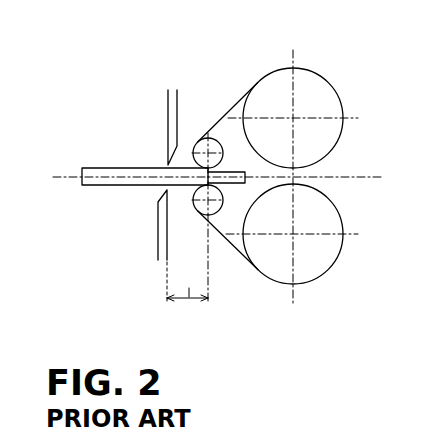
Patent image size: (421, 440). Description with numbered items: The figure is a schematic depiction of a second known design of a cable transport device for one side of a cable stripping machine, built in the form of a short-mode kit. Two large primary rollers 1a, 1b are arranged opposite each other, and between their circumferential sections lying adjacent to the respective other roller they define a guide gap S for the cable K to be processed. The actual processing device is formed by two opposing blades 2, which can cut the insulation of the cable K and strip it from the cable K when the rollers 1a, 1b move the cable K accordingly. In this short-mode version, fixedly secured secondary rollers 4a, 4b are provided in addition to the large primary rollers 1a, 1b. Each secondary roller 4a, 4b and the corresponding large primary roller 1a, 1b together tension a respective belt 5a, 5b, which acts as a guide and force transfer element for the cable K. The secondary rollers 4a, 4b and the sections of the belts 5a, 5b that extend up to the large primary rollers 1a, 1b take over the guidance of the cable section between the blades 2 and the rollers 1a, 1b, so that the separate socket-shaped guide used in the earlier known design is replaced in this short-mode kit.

The cable K is at (100, 168).
The blades 2 is at (168, 117).
The large primary roller 1a is at (313, 93).
The large primary roller 1b is at (313, 260).
The secondary roller 4a is at (202, 145).
The secondary roller 4b is at (202, 205).
The belt 5a is at (232, 108).
The belt 5b is at (230, 243).
The guide gap S is at (303, 173).